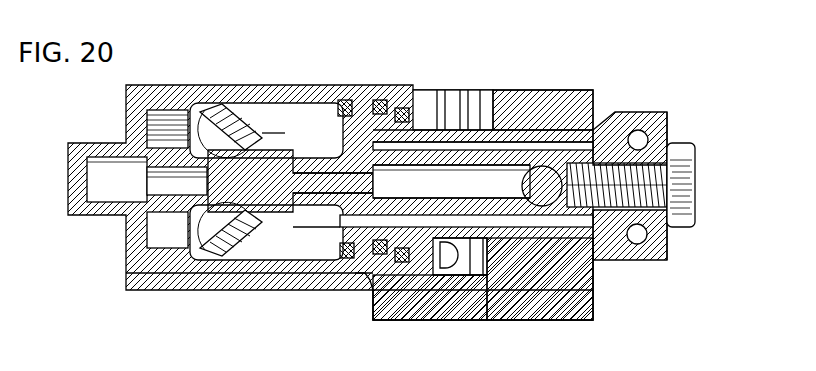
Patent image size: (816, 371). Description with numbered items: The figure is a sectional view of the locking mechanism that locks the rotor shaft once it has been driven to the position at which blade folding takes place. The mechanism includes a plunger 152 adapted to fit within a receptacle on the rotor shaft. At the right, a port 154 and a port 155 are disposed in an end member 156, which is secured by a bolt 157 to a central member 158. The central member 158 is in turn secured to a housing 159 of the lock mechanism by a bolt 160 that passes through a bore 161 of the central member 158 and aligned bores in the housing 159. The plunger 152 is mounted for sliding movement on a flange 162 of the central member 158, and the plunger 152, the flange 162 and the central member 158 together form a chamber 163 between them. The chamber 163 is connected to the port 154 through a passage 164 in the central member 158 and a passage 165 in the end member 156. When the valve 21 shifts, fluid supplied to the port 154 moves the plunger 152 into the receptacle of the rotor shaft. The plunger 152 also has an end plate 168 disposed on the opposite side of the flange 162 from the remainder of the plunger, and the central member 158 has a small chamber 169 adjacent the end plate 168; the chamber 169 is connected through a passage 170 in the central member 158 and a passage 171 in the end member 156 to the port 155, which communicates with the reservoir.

The plunger 152 is at (125, 247).
The port 154 is at (665, 236).
The port 155 is at (650, 143).
The end member 156 is at (672, 121).
The bolt 157 is at (697, 195).
The central member 158 is at (485, 130).
The housing 159 is at (577, 318).
The bolt 160 is at (540, 166).
The bore 161 is at (525, 188).
The flange 162 is at (336, 100).
The chamber 163 is at (250, 232).
The passage 164 is at (482, 240).
The passage 165 is at (603, 212).
The end plate 168 is at (420, 105).
The small chamber 169 is at (365, 284).
The passage 170 is at (455, 127).
The passage 171 is at (606, 125).
The valve 21 is at (290, 133).